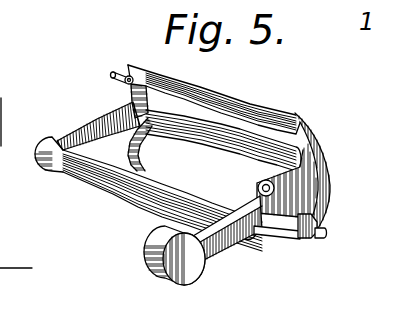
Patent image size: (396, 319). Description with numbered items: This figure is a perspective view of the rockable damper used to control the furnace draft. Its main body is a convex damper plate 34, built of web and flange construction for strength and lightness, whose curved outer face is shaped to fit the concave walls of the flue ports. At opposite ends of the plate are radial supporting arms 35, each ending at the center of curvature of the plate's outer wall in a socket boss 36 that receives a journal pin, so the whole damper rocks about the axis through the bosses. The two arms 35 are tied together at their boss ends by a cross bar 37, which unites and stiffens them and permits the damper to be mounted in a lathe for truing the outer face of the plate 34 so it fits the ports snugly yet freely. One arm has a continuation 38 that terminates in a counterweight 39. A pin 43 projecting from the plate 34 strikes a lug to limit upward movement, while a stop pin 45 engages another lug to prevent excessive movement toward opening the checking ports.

The convex damper plate 34 is at (264, 107).
The radial supporting arms 35 is at (94, 125).
The socket boss 36 is at (54, 144).
The cross bar 37 is at (97, 178).
The continuation 38 is at (221, 247).
The counterweight 39 is at (146, 253).
The pin 43 is at (327, 236).
The stop pin 45 is at (115, 70).